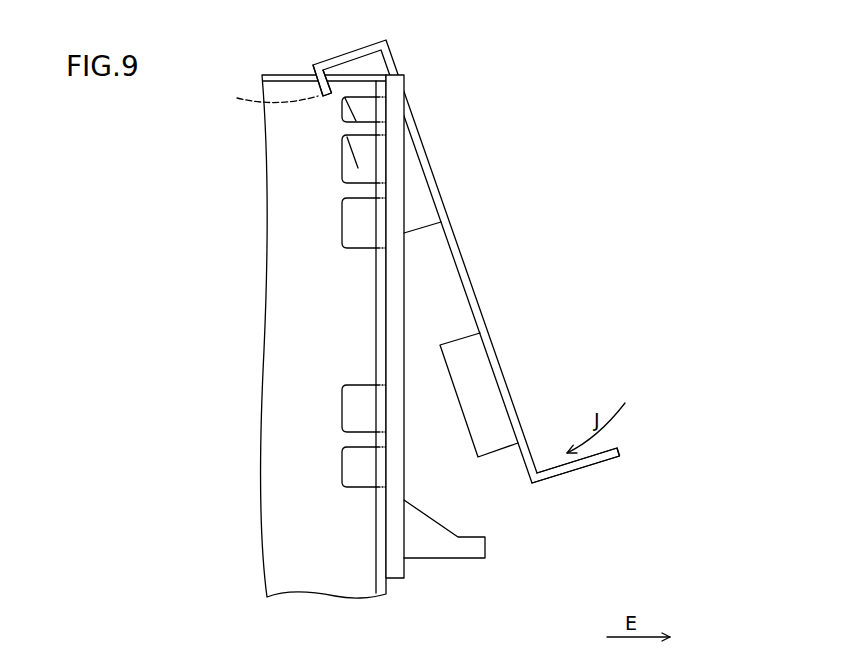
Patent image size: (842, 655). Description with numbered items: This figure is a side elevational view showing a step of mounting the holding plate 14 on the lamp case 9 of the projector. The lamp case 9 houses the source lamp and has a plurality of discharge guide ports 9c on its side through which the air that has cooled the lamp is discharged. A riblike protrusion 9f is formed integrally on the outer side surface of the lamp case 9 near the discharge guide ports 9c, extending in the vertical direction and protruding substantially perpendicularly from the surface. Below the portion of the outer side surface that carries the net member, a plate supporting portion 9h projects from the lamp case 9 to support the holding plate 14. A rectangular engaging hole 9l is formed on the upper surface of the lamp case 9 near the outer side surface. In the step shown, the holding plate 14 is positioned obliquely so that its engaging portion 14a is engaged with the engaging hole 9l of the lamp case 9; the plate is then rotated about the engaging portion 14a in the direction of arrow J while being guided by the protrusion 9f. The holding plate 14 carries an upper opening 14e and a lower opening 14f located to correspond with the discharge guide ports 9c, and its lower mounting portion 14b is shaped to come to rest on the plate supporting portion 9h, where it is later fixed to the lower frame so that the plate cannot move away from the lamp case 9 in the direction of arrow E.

The lamp case 9 is at (245, 63).
The discharge guide ports 9c is at (346, 109).
The protrusion 9f is at (393, 88).
The plate supporting portion 9h is at (467, 547).
The engaging hole 9l is at (267, 95).
The holding plate 14 is at (440, 268).
The engaging portion 14a is at (322, 94).
The lower mounting portion 14b is at (595, 462).
The upper opening 14e is at (427, 224).
The lower opening 14f is at (500, 452).